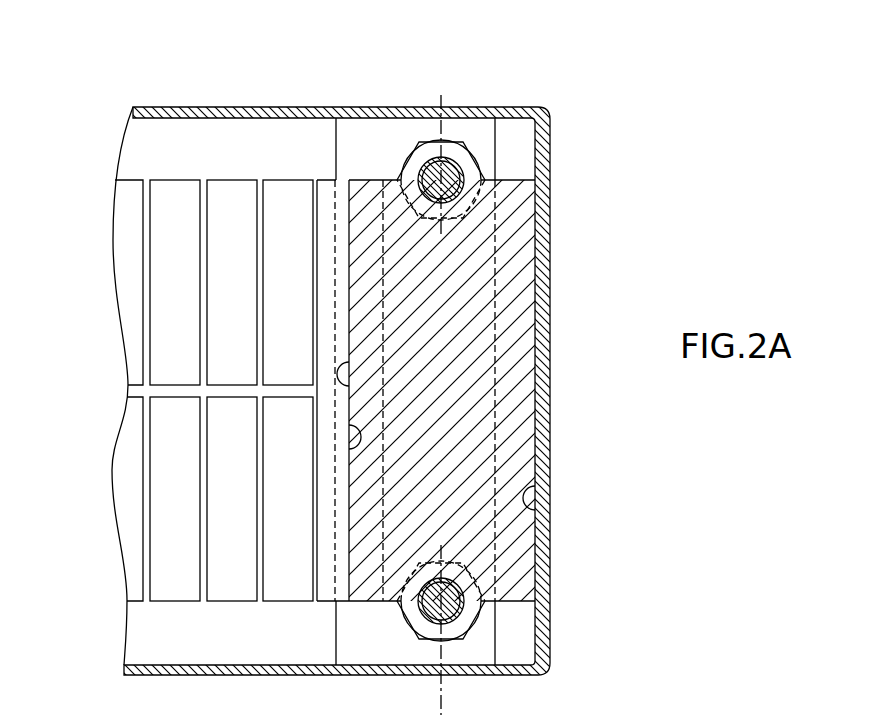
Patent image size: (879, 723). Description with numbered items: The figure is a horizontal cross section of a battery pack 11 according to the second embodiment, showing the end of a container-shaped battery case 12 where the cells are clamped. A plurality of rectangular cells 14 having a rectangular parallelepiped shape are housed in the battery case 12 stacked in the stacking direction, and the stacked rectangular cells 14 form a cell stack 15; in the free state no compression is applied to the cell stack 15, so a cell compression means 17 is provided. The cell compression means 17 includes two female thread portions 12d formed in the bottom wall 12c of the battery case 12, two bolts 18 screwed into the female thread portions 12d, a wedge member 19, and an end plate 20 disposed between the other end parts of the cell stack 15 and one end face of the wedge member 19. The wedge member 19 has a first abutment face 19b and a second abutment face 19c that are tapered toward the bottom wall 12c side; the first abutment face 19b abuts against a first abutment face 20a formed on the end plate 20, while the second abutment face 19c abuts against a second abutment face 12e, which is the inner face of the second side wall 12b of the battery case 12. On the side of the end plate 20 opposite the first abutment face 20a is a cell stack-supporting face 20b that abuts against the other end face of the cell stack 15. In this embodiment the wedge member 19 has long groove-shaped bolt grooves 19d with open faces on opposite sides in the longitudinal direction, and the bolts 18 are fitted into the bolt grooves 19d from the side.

The battery pack 11 is at (274, 84).
The battery case 12 is at (398, 104).
The second side wall 12b is at (552, 402).
The bottom wall 12c is at (283, 645).
The female thread portion 12d is at (453, 152).
The second abutment face 12e is at (540, 513).
The rectangular cell 14 is at (188, 295).
The cell stack 15 is at (201, 151).
The cell compression means 17 is at (509, 132).
The bolt 18 is at (449, 180).
The wedge member 19 is at (538, 253).
The first abutment face 19b is at (340, 381).
The second abutment face 19c is at (538, 329).
The bolt groove 19d is at (410, 188).
The end plate 20 is at (312, 565).
The first abutment face 20a is at (352, 455).
The cell stack-supporting face 20b is at (317, 233).